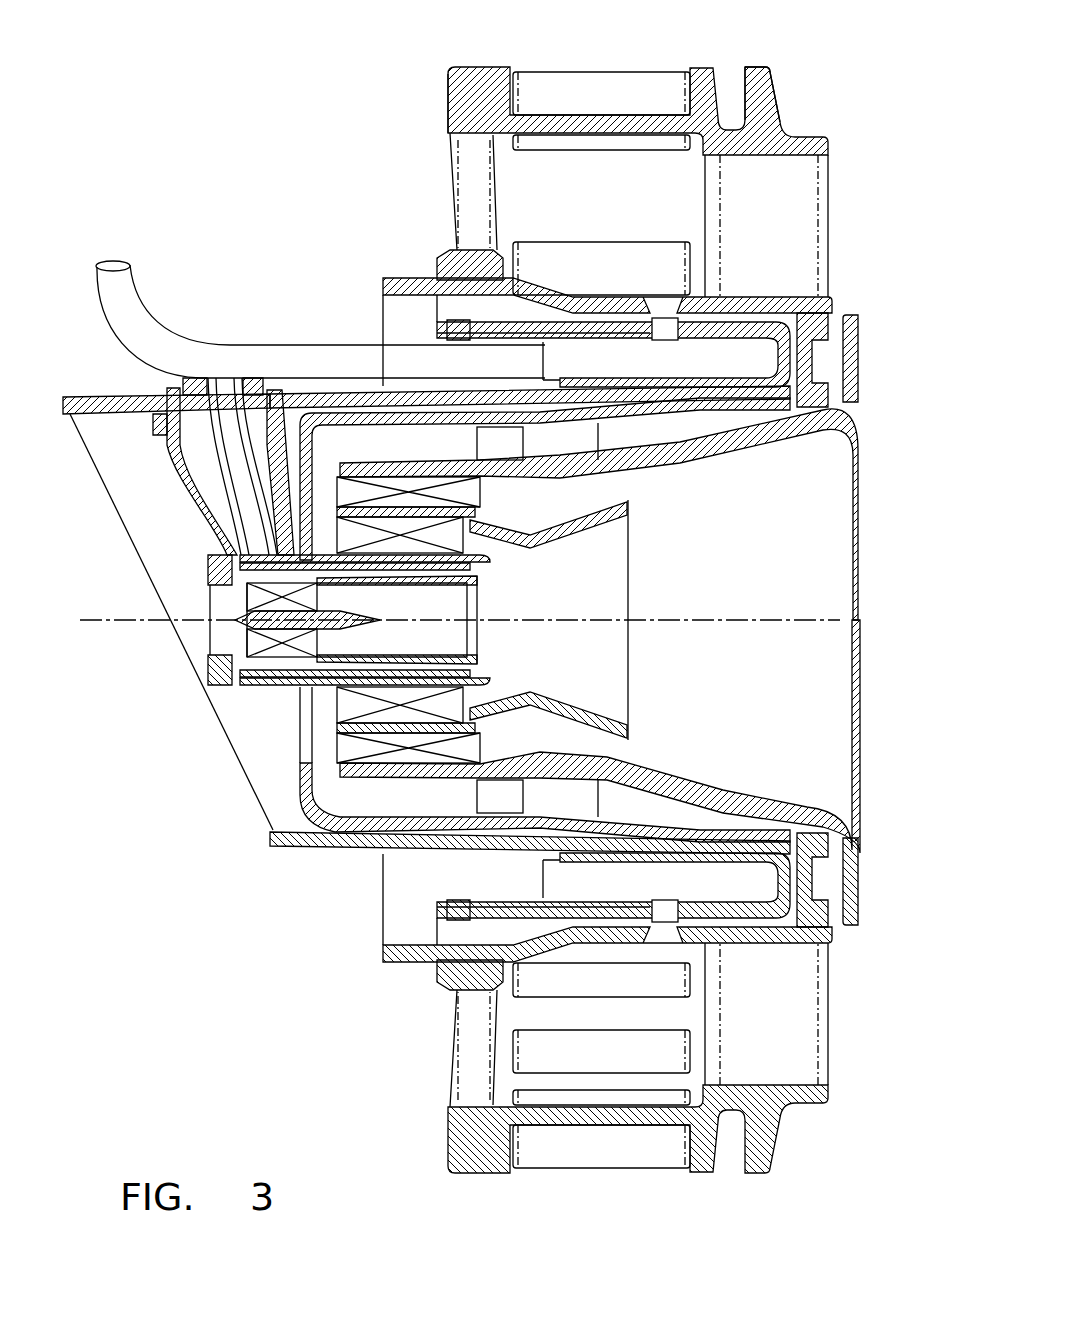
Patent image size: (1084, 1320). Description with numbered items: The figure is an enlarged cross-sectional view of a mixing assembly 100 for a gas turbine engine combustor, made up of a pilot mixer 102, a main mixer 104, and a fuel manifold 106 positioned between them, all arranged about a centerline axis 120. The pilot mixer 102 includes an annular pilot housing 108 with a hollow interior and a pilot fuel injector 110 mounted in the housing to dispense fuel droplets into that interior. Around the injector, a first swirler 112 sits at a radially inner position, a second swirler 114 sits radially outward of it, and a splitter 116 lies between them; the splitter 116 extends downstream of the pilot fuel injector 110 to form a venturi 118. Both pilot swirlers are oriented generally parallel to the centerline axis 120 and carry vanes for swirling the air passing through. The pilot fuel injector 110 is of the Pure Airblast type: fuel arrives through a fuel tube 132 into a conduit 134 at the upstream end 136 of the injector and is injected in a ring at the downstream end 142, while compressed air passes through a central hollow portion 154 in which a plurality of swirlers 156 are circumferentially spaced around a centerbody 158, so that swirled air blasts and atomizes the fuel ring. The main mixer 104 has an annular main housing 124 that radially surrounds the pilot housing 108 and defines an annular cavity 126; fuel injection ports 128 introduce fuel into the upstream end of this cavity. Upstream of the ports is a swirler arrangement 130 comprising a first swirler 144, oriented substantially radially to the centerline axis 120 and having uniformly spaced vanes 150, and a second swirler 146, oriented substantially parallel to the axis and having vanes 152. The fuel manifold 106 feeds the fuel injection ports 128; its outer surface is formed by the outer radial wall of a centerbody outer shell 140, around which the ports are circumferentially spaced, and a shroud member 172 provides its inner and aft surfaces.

The mixing assembly 100 is at (280, 94).
The pilot mixer 102 is at (800, 514).
The main mixer 104 is at (835, 233).
The fuel manifold 106 is at (735, 358).
The pilot housing 108 is at (860, 806).
The pilot fuel injector 110 is at (232, 690).
The first swirler 112 is at (355, 711).
The second swirler 114 is at (330, 776).
The splitter 116 is at (350, 731).
The venturi 118 is at (543, 543).
The centerline axis 120 is at (740, 624).
The main housing 124 is at (785, 126).
The annular cavity 126 is at (762, 176).
The fuel injection ports 128 is at (648, 336).
The swirler arrangement 130 is at (428, 99).
The fuel tube 132 is at (215, 348).
The conduit 134 is at (222, 468).
The upstream end 136 is at (208, 665).
The centerbody outer shell 140 is at (835, 310).
The downstream end 142 is at (473, 666).
The first swirler 144 is at (620, 58).
The second swirler 146 is at (445, 174).
The vanes 150 is at (680, 1052).
The vanes 152 is at (475, 1009).
The central hollow portion 154 is at (447, 614).
The swirlers 156 is at (208, 558).
The centerbody 158 is at (235, 619).
The shroud member 172 is at (703, 446).